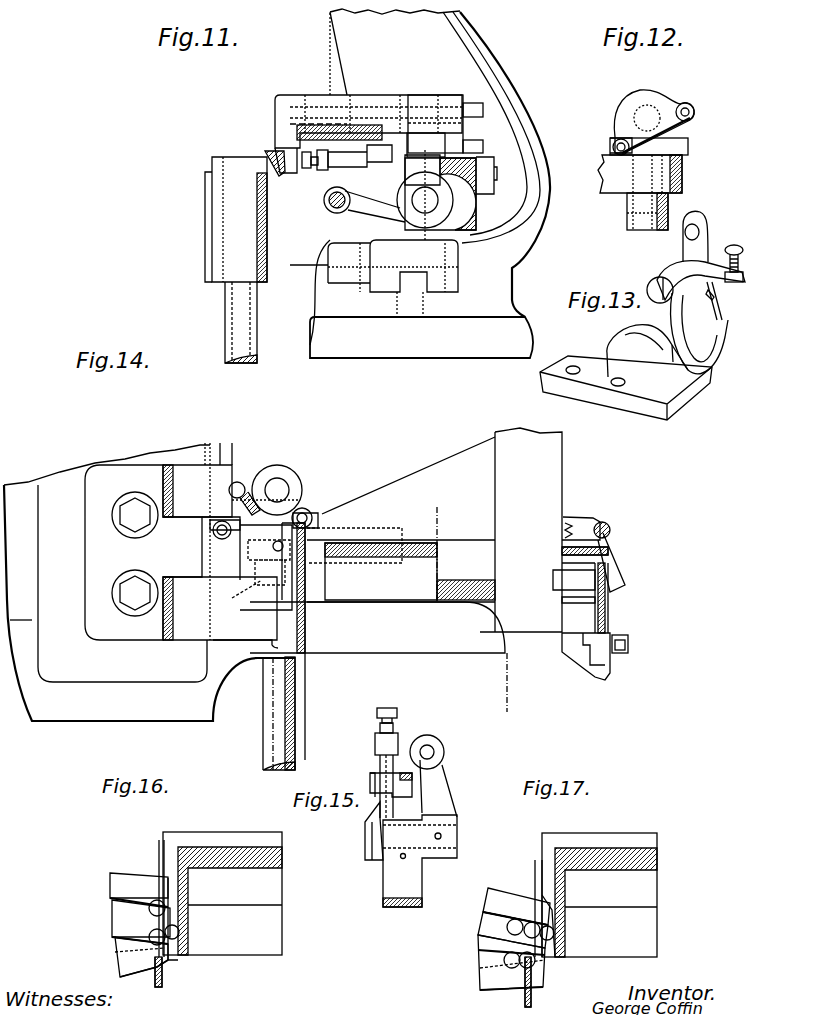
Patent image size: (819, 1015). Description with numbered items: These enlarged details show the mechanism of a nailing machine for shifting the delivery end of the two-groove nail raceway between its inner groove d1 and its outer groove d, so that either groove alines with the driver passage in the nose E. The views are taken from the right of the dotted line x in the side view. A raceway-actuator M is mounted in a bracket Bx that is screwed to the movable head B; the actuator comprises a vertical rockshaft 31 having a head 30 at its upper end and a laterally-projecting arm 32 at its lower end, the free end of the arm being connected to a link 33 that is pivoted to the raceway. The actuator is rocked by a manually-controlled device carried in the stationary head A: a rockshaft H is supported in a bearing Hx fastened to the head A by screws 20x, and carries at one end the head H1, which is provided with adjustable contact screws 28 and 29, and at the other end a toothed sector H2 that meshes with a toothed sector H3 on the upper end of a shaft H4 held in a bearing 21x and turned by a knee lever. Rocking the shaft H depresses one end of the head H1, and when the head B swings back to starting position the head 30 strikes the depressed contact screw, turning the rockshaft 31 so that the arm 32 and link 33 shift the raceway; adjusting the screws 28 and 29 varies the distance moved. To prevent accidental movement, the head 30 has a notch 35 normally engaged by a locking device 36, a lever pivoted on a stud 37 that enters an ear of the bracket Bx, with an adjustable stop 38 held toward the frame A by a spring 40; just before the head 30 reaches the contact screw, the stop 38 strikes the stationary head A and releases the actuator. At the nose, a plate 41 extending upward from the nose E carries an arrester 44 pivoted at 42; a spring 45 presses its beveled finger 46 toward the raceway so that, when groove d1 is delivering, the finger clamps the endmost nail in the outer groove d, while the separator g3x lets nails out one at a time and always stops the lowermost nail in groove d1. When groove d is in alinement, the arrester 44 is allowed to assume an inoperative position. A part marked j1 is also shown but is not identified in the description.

In FIG. 11, the stationary head A is at (310, 270).
In FIG. 14, the stationary head A is at (60, 472).
In FIG. 11, the movable head B is at (480, 227).
In FIG. 14, the movable head B is at (470, 463).
In FIG. 11, the bracket Bx is at (510, 165).
In FIG. 12, the bracket Bx is at (683, 180).
In FIG. 15, the bracket Bx is at (388, 880).
In FIG. 14, the nose E is at (578, 660).
In FIG. 16, the nose E is at (275, 888).
In FIG. 17, the nose E is at (650, 895).
In FIG. 11, the rockshaft H is at (307, 97).
In FIG. 11, the head H1 is at (460, 110).
In FIG. 12, the head H1 is at (652, 103).
In FIG. 14, the head H1 is at (280, 488).
In FIG. 11, the toothed sector H2 is at (262, 130).
In FIG. 14, the toothed sector H2 is at (302, 510).
In FIG. 11, the toothed sector H3 is at (266, 160).
In FIG. 14, the toothed sector H3 is at (252, 545).
In FIG. 11, the shaft H4 is at (230, 330).
In FIG. 14, the shaft H4 is at (290, 714).
In FIG. 14, the bearing Hx is at (197, 477).
In FIG. 11, the raceway-actuator M is at (428, 147).
In FIG. 12, the raceway-actuator M is at (616, 118).
In FIG. 14, the raceway-actuator M is at (322, 520).
In FIG. 14, the dotted line x is at (468, 608).
In FIG. 14, the screws 20x is at (135, 593).
In FIG. 11, the bearing 21x is at (213, 232).
In FIG. 14, the bearing 21x is at (302, 622).
In FIG. 11, the contact screw 28 is at (443, 143).
In FIG. 12, the contact screw 28 is at (694, 104).
In FIG. 14, the contact screw 28 is at (238, 486).
In FIG. 11, the contact screw 29 is at (473, 220).
In FIG. 12, the contact screw 29 is at (612, 147).
In FIG. 14, the contact screw 29 is at (312, 510).
In FIG. 11, the head 30 is at (488, 160).
In FIG. 12, the head 30 is at (684, 143).
In FIG. 13, the head 30 is at (690, 380).
In FIG. 15, the head 30 is at (366, 848).
In FIG. 12, the rockshaft 31 is at (662, 170).
In FIG. 15, the rockshaft 31 is at (370, 780).
In FIG. 11, the arm 32 is at (350, 213).
In FIG. 12, the arm 32 is at (668, 208).
In FIG. 13, the arm 32 is at (684, 233).
In FIG. 14, the arm 32 is at (250, 598).
In FIG. 15, the arm 32 is at (438, 786).
In FIG. 11, the link 33 is at (325, 207).
In FIG. 13, the notch 35 is at (672, 349).
In FIG. 15, the notch 35 is at (366, 826).
In FIG. 11, the locking device 36 is at (322, 172).
In FIG. 13, the locking device 36 is at (744, 277).
In FIG. 14, the locking device 36 is at (213, 540).
In FIG. 15, the locking device 36 is at (375, 745).
In FIG. 11, the stud 37 is at (383, 147).
In FIG. 13, the stud 37 is at (658, 282).
In FIG. 11, the adjustable stop 38 is at (308, 168).
In FIG. 13, the adjustable stop 38 is at (735, 245).
In FIG. 14, the adjustable stop 38 is at (212, 528).
In FIG. 15, the adjustable stop 38 is at (395, 712).
In FIG. 13, the spring 40 is at (719, 300).
In FIG. 14, the plate 41 is at (608, 625).
In FIG. 16, the plate 41 is at (185, 957).
In FIG. 17, the plate 41 is at (555, 958).
In FIG. 14, the pivot 42 is at (609, 528).
In FIG. 14, the arrester 44 is at (618, 570).
In FIG. 16, the arrester 44 is at (163, 976).
In FIG. 17, the arrester 44 is at (532, 994).
In FIG. 14, the spring 45 is at (582, 524).
In FIG. 14, the beveled finger 46 is at (610, 588).
In FIG. 16, the beveled finger 46 is at (120, 970).
In FIG. 17, the beveled finger 46 is at (505, 992).
In FIG. 16, the separator g3x is at (156, 851).
In FIG. 17, the separator g3x is at (533, 859).
In FIG. 16, the groove d1 is at (110, 896).
In FIG. 17, the groove d1 is at (483, 910).
In FIG. 16, the roller carrier j1 is at (112, 915).
In FIG. 17, the roller carrier j1 is at (480, 936).
In FIG. 16, the groove d is at (113, 945).
In FIG. 17, the groove d is at (480, 962).